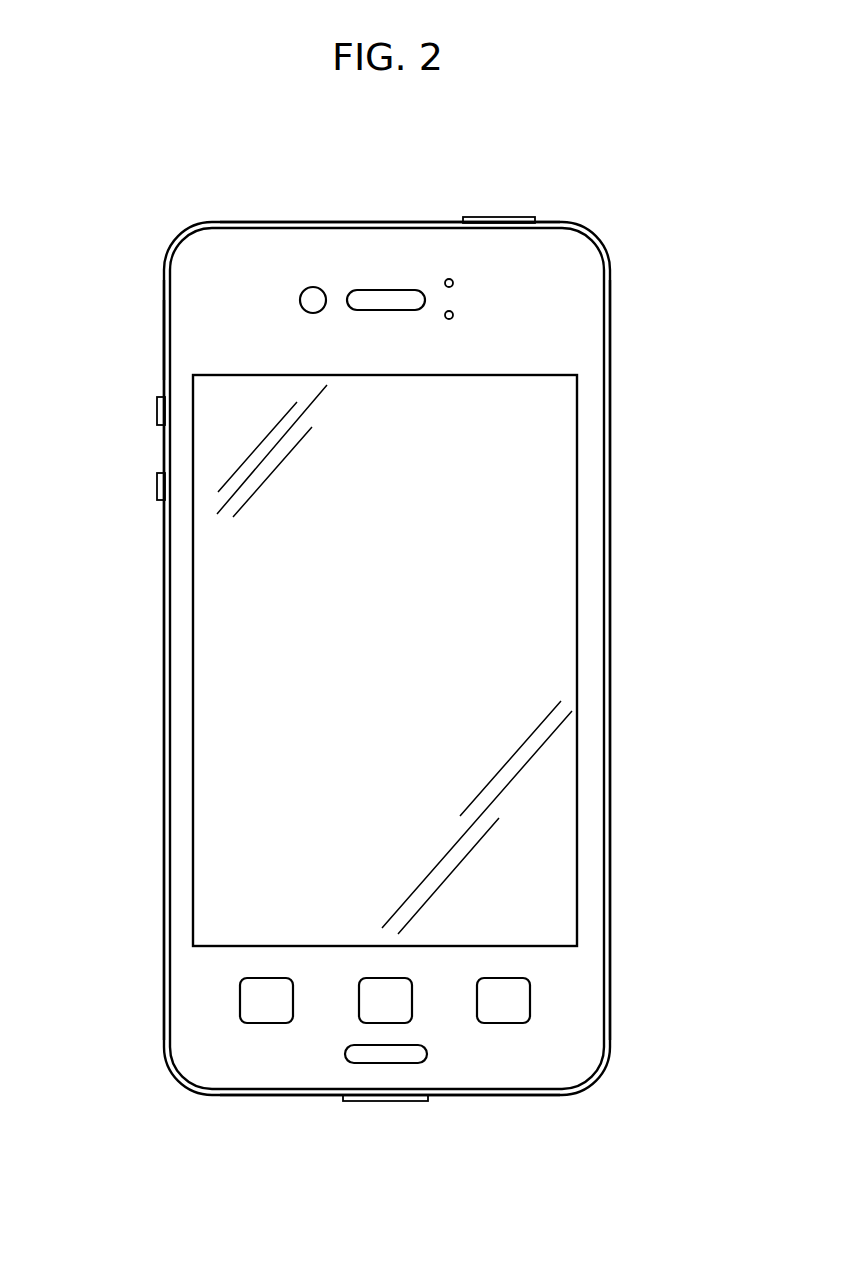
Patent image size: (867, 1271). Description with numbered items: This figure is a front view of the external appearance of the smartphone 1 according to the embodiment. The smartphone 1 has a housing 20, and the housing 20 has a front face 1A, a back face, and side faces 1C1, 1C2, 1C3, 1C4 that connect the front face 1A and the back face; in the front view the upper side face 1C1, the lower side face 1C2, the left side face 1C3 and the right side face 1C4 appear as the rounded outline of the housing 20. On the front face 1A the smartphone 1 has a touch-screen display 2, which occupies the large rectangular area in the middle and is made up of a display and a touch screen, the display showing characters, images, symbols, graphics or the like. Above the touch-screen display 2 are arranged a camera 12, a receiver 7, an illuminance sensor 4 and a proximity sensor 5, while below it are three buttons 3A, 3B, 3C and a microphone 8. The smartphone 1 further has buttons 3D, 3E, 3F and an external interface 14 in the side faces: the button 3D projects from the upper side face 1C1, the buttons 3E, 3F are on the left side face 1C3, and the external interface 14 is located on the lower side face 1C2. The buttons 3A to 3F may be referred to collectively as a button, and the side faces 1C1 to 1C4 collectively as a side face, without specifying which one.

The smartphone 1 is at (653, 265).
The front face 1A is at (240, 288).
The side face 1C1 is at (350, 222).
The side face 1C2 is at (470, 1098).
The side face 1C3 is at (163, 686).
The side face 1C4 is at (604, 418).
The touch-screen display 2 is at (560, 517).
The button 3A is at (266, 1010).
The button 3B is at (374, 1013).
The button 3C is at (494, 1013).
The button 3D is at (503, 217).
The button 3E is at (157, 406).
The button 3F is at (157, 483).
The illuminance sensor 4 is at (449, 279).
The proximity sensor 5 is at (454, 317).
The receiver 7 is at (385, 297).
The microphone 8 is at (412, 1056).
The camera 12 is at (312, 297).
The external interface 14 is at (355, 1102).
The housing 20 is at (164, 334).